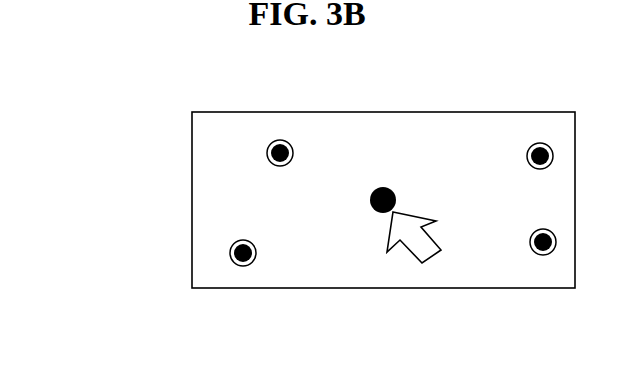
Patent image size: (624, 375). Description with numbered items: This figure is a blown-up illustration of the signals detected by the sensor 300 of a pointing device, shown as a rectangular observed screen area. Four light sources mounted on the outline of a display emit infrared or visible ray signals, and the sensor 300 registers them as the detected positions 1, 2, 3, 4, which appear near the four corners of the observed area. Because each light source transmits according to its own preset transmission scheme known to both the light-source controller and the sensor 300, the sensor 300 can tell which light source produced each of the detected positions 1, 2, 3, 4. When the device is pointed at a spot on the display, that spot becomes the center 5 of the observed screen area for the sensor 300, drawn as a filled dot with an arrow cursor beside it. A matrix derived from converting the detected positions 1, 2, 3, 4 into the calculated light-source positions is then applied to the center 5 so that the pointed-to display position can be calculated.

The sensor 300 is at (192, 202).
The detected position 1 is at (280, 140).
The detected position 2 is at (540, 143).
The detected position 3 is at (543, 255).
The detected position 4 is at (243, 266).
The center 5 is at (383, 187).